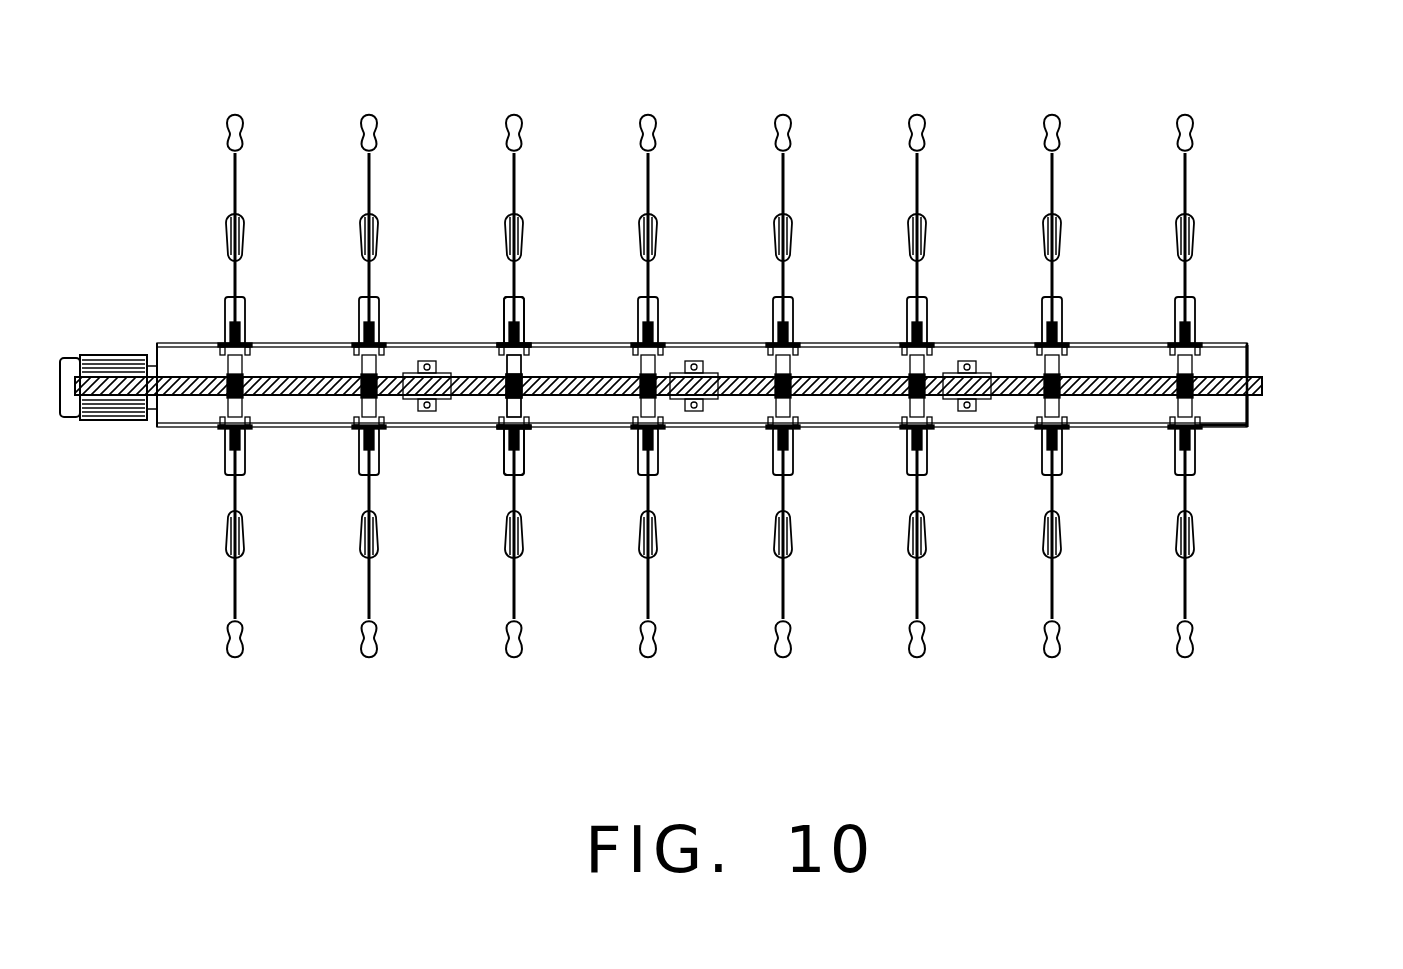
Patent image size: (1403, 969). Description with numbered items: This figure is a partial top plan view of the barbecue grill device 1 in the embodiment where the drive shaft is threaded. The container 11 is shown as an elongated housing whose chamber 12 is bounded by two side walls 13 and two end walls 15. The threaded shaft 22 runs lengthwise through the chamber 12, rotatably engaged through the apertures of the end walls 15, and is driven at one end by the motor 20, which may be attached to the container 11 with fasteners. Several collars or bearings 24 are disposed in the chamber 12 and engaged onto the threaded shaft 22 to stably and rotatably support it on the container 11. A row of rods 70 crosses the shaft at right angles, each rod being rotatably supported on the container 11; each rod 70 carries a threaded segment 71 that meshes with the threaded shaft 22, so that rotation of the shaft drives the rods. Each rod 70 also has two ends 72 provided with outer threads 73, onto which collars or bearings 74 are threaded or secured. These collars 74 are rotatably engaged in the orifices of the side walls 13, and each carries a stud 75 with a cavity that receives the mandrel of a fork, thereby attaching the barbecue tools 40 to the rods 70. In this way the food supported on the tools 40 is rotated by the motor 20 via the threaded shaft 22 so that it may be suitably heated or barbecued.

The barbecue grill device 1 is at (1265, 88).
The container 11 is at (1255, 318).
The chamber 12 is at (1245, 412).
The side walls 13 is at (1210, 427).
The end walls 15 is at (1249, 365).
The motor 20 is at (121, 353).
The threaded shaft 22 is at (308, 343).
The bearings 24 is at (447, 377).
The barbecue tools 40 is at (517, 178).
The rods 70 is at (517, 365).
The threaded segment 71 is at (521, 395).
The ends 72 is at (504, 430).
The outer threads 73 is at (518, 447).
The collars 74 is at (505, 345).
The stud 75 is at (517, 300).